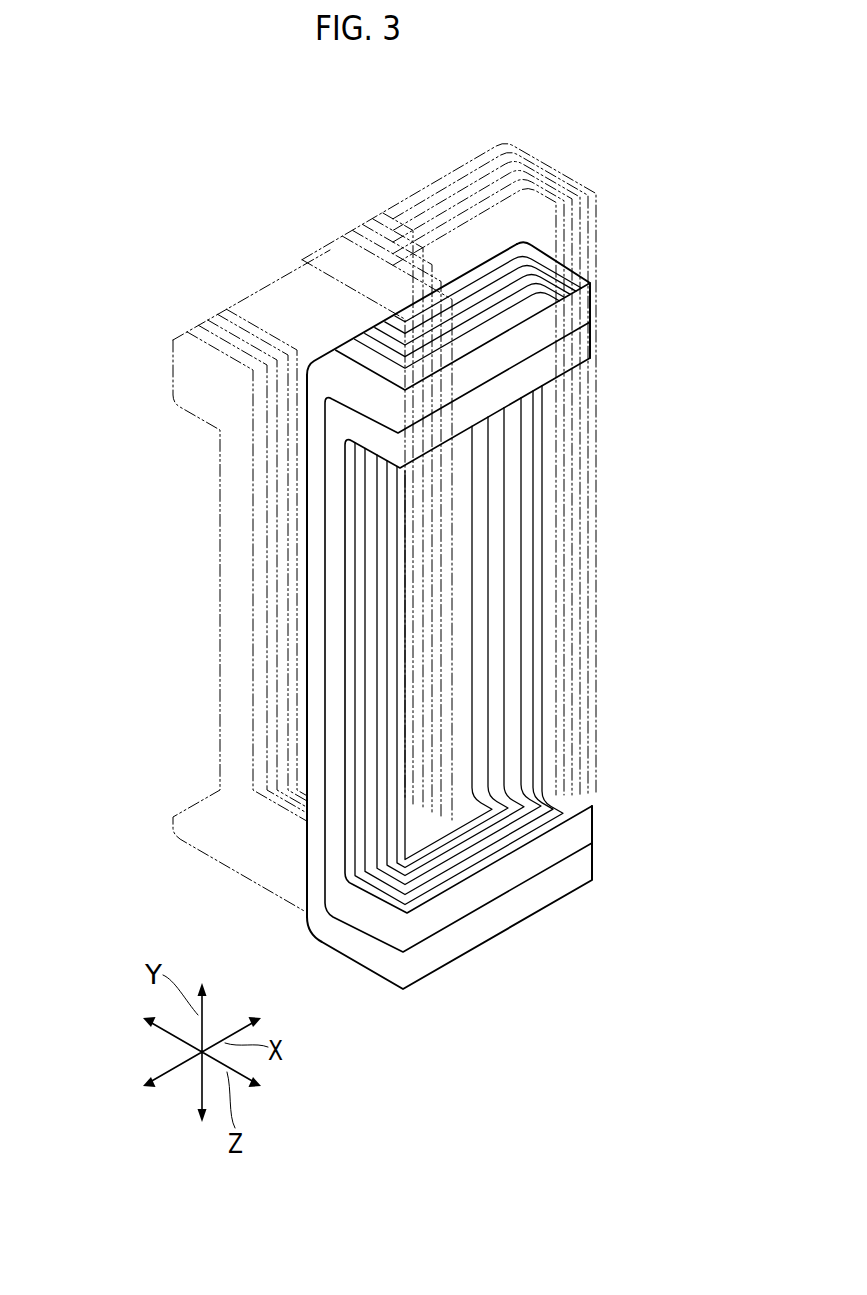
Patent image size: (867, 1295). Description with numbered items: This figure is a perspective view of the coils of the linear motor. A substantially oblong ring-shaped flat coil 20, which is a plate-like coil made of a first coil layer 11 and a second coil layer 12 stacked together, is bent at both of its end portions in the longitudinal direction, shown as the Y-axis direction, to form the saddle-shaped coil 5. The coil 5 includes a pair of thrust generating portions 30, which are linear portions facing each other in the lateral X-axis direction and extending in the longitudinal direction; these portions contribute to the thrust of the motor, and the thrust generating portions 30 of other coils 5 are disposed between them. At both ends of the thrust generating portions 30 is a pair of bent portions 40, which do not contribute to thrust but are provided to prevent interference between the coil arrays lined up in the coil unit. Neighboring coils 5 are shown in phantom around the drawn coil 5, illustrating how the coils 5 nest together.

The coil 5 is at (433, 176).
The flat coil 20 is at (540, 268).
The bent portions 40 is at (410, 615).
The thrust generating portions 30 is at (410, 646).
The first coil layer 11 is at (555, 490).
The second coil layer 12 is at (300, 542).